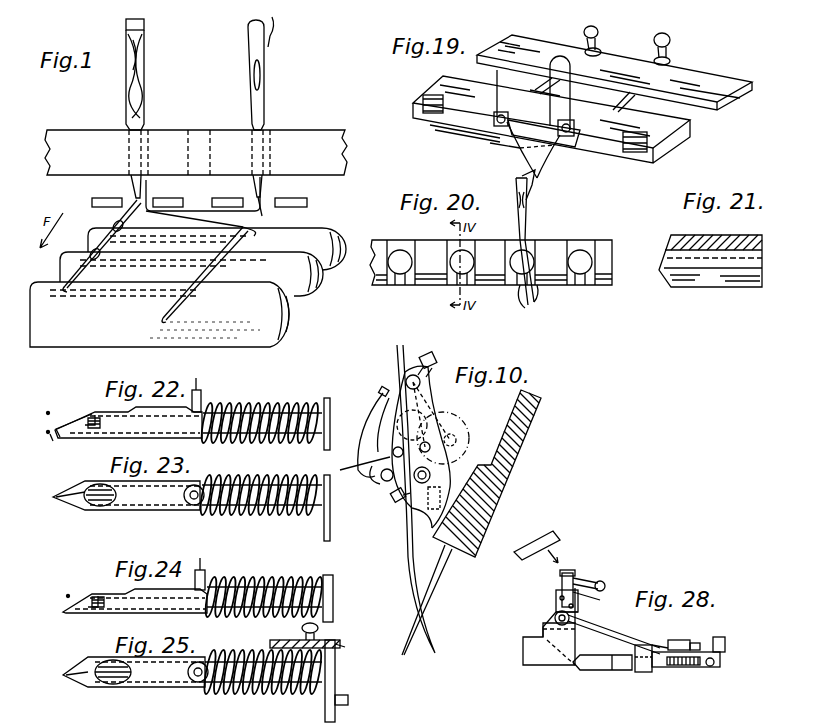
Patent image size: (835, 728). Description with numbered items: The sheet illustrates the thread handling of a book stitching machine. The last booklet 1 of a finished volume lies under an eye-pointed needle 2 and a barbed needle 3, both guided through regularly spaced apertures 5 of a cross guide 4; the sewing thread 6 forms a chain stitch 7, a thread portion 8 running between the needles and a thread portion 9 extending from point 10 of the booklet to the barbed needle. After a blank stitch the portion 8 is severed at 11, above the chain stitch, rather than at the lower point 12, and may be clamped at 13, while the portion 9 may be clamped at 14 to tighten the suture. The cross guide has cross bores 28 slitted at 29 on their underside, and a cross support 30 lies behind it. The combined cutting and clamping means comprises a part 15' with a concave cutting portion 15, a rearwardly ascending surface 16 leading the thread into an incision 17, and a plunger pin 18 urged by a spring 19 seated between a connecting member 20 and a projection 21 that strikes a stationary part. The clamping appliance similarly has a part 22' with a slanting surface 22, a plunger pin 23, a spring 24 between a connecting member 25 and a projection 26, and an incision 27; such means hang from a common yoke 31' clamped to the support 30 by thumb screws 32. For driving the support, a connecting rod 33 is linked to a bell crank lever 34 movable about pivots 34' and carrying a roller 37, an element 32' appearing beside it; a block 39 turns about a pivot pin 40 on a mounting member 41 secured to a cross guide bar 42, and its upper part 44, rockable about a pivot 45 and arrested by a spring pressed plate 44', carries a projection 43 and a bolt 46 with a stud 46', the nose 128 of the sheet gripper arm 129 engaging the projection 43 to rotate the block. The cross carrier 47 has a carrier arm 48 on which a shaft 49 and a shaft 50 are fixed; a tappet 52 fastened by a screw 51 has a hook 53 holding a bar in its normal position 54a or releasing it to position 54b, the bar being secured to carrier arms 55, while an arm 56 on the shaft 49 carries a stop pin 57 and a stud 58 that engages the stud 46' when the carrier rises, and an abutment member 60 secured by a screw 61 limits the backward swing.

In FIG. 1, the last booklet 1 is at (308, 232).
In FIG. 1, the eye-pointed needle 2 is at (248, 42).
In FIG. 1, the barbed needle 3 is at (144, 42).
In FIG. 20, the barbed needle 3 is at (513, 192).
In FIG. 1, the traverse (cross guide) 4 is at (323, 130).
In FIG. 19, the traverse (cross guide) 4 is at (690, 132).
In FIG. 20, the traverse (cross guide) 4 is at (610, 246).
In FIG. 22, the traverse (cross guide) 4 is at (197, 372).
In FIG. 24, the traverse (cross guide) 4 is at (205, 556).
In FIG. 28, the traverse (cross guide) 4 is at (590, 670).
In FIG. 1, the apertures 5 is at (155, 143).
In FIG. 21, the apertures 5 is at (664, 258).
In FIG. 1, the sewing thread 6 is at (273, 31).
In FIG. 10, the sewing thread 6 is at (398, 354).
In FIG. 1, the chain stitch 7 is at (113, 224).
In FIG. 1, the thread portion 8 is at (125, 122).
In FIG. 19, the thread portion 8 is at (494, 72).
In FIG. 20, the thread portion 8 is at (538, 176).
In FIG. 22, the thread portion 8 is at (46, 434).
In FIG. 24, the thread portion 8 is at (64, 584).
In FIG. 1, the thread portion 9 is at (146, 120).
In FIG. 19, the thread portion 9 is at (545, 112).
In FIG. 22, the thread portion 9 is at (48, 403).
In FIG. 1, the point of booklet 10 is at (274, 230).
In FIG. 1, the cutting point 11 is at (127, 151).
In FIG. 19, the cutting point 11 is at (580, 128).
In FIG. 1, the alternative cutting point 12 is at (197, 198).
In FIG. 1, the clamping point 13 is at (272, 151).
In FIG. 19, the clamping point 13 is at (496, 126).
In FIG. 1, the clamping point 14 is at (142, 151).
In FIG. 19, the clamping point 14 is at (520, 147).
In FIG. 22, the concave cutting portion 15 is at (54, 451).
In FIG. 19, the cutting and clamping part 15' is at (631, 102).
In FIG. 22, the cutting and clamping part 15' is at (141, 436).
In FIG. 23, the cutting and clamping part 15' is at (126, 507).
In FIG. 22, the rearwardly ascending surface 16 is at (80, 420).
In FIG. 23, the rearwardly ascending surface 16 is at (70, 505).
In FIG. 22, the incision 17 is at (92, 410).
In FIG. 22, the plunger pin 18 is at (95, 436).
In FIG. 23, the plunger pin 18 is at (100, 507).
In FIG. 22, the spring 19 is at (244, 403).
In FIG. 23, the spring 19 is at (246, 512).
In FIG. 22, the connecting member 20 is at (326, 400).
In FIG. 23, the connecting member 20 is at (324, 531).
In FIG. 22, the projection 21 is at (200, 390).
In FIG. 23, the projection 21 is at (193, 507).
In FIG. 24, the slanting surface 22 is at (119, 607).
In FIG. 25, the slanting surface 22 is at (65, 664).
In FIG. 19, the clamping appliance part 22' is at (536, 83).
In FIG. 25, the clamping appliance part 22' is at (134, 688).
In FIG. 24, the plunger pin 23 is at (100, 595).
In FIG. 25, the plunger pin 23 is at (110, 686).
In FIG. 24, the spring 24 is at (277, 578).
In FIG. 25, the spring 24 is at (246, 694).
In FIG. 24, the connecting member 25 is at (334, 620).
In FIG. 25, the connecting member 25 is at (325, 712).
In FIG. 24, the projection 26 is at (206, 572).
In FIG. 25, the projection 26 is at (190, 686).
In FIG. 24, the incision 27 is at (96, 613).
In FIG. 20, the cross bores 28 is at (580, 254).
In FIG. 21, the cross bores 28 is at (720, 268).
In FIG. 20, the slits 29 is at (577, 285).
In FIG. 21, the slits 29 is at (738, 286).
In FIG. 19, the cross support 30 is at (705, 68).
In FIG. 25, the cross support 30 is at (272, 642).
In FIG. 28, the cross support 30 is at (634, 648).
In FIG. 19, the common yoke 31' is at (583, 38).
In FIG. 25, the common yoke 31' is at (351, 647).
In FIG. 28, the common yoke 31' is at (722, 674).
In FIG. 19, the thumb screws 32 is at (649, 44).
In FIG. 25, the thumb screws 32 is at (290, 630).
In FIG. 28, the screw 32' is at (683, 674).
In FIG. 28, the connecting rod 33 is at (600, 630).
In FIG. 28, the bell crank lever 34 is at (704, 652).
In FIG. 28, the pivots 34' is at (702, 634).
In FIG. 28, the roller 37 is at (660, 642).
In FIG. 28, the block 39 is at (557, 607).
In FIG. 28, the pivot pin 40 is at (557, 595).
In FIG. 28, the mounting member 41 is at (546, 627).
In FIG. 28, the cross guide bar 42 is at (523, 653).
In FIG. 28, the projection (control member) 43 is at (560, 573).
In FIG. 28, the upper part of block 44 is at (576, 581).
In FIG. 28, the spring pressed plate 44' is at (577, 613).
In FIG. 28, the pivot 45 is at (598, 599).
In FIG. 28, the bolt 46 is at (596, 573).
In FIG. 28, the stud 46' is at (612, 582).
In FIG. 10, the cross carrier 47 is at (498, 484).
In FIG. 10, the carrier arm 48 is at (432, 392).
In FIG. 10, the shaft 49 is at (406, 381).
In FIG. 10, the shaft (axle) 50 is at (419, 486).
In FIG. 10, the screw 51 is at (428, 354).
In FIG. 10, the tappet 52 is at (370, 438).
In FIG. 10, the hook-shaped projection 53 is at (425, 420).
In FIG. 10, the normal bar position 54a is at (453, 414).
In FIG. 10, the released bar position 54b is at (456, 440).
In FIG. 10, the carrier arms 55 is at (359, 465).
In FIG. 10, the arm 56 is at (378, 472).
In FIG. 10, the stop pin 57 is at (393, 452).
In FIG. 10, the stud 58 is at (383, 481).
In FIG. 10, the abutment member 60 is at (430, 450).
In FIG. 10, the screw 61 is at (394, 498).
In FIG. 28, the nose 128 is at (556, 546).
In FIG. 28, the sheet gripper arm 129 is at (538, 538).